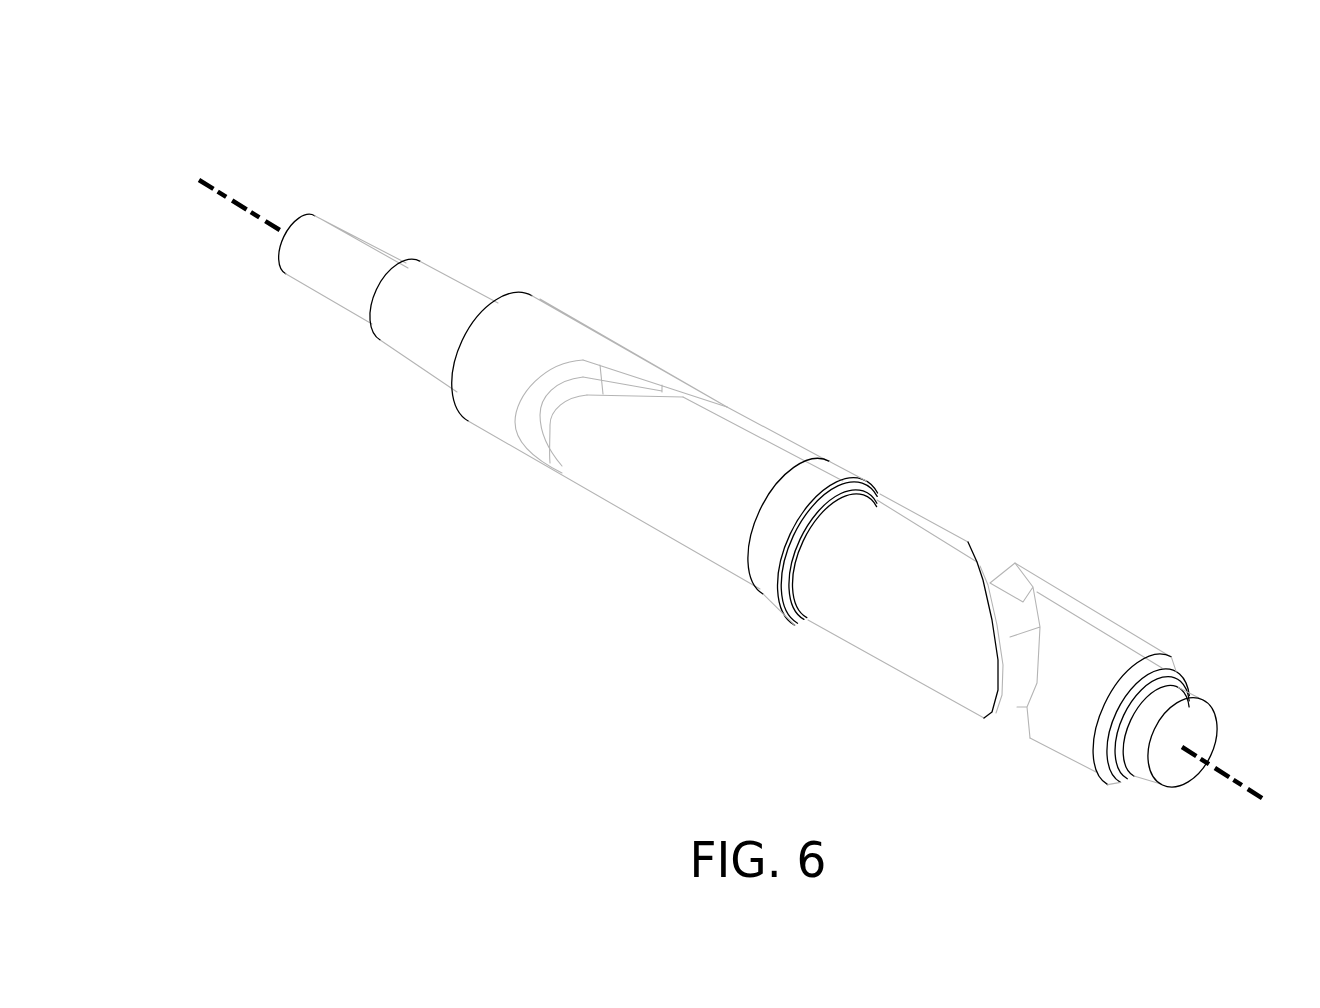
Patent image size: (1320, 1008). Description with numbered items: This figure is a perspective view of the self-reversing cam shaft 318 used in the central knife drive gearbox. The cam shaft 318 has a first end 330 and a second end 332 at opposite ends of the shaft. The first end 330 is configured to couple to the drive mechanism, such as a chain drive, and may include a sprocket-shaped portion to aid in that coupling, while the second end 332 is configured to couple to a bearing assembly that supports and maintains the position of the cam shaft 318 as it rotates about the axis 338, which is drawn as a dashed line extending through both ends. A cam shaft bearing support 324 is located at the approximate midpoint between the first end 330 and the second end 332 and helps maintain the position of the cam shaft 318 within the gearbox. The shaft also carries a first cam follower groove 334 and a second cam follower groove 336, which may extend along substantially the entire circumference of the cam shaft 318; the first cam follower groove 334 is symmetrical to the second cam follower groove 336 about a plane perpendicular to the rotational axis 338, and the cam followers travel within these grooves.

The cam shaft 318 is at (173, 124).
The cam shaft bearing support 324 is at (863, 481).
The first end 330 is at (328, 293).
The second end 332 is at (1157, 780).
The first cam follower groove 334 is at (544, 447).
The second cam follower groove 336 is at (1023, 717).
The axis 338 is at (242, 205).